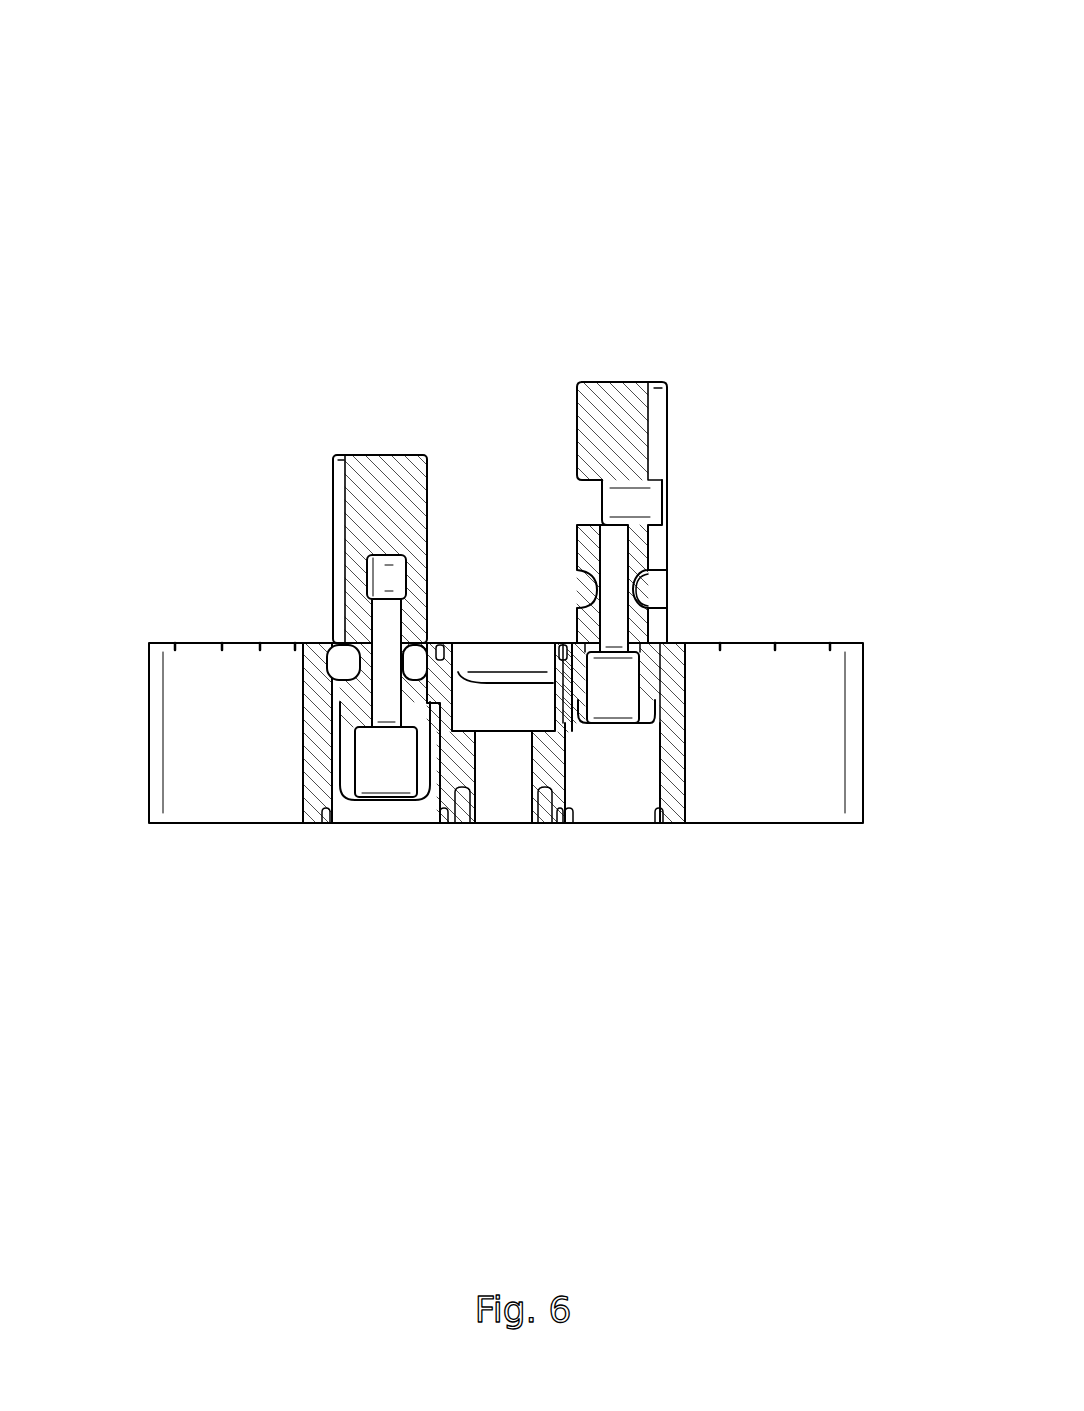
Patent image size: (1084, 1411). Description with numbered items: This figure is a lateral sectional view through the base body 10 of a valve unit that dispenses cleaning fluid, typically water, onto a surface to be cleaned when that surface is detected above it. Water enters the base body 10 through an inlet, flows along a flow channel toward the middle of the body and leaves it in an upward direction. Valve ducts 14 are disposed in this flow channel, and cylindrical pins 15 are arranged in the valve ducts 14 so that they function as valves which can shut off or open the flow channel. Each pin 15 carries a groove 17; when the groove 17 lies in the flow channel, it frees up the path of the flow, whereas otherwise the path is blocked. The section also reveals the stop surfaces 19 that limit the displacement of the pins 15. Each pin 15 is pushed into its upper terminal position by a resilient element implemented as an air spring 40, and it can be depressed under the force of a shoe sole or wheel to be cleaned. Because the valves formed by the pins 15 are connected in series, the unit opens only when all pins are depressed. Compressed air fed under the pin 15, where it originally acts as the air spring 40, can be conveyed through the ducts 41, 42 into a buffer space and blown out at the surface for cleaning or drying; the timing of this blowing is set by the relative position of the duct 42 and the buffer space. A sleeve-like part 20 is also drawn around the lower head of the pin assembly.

The base body 10 is at (785, 770).
The valve duct 14 is at (640, 792).
The pin 15 is at (375, 480).
The groove 17 is at (655, 590).
The stop surface 19 is at (458, 703).
The sleeve 20 is at (427, 777).
The air spring 40 is at (388, 767).
The duct 41 is at (387, 668).
The duct 42 is at (388, 577).